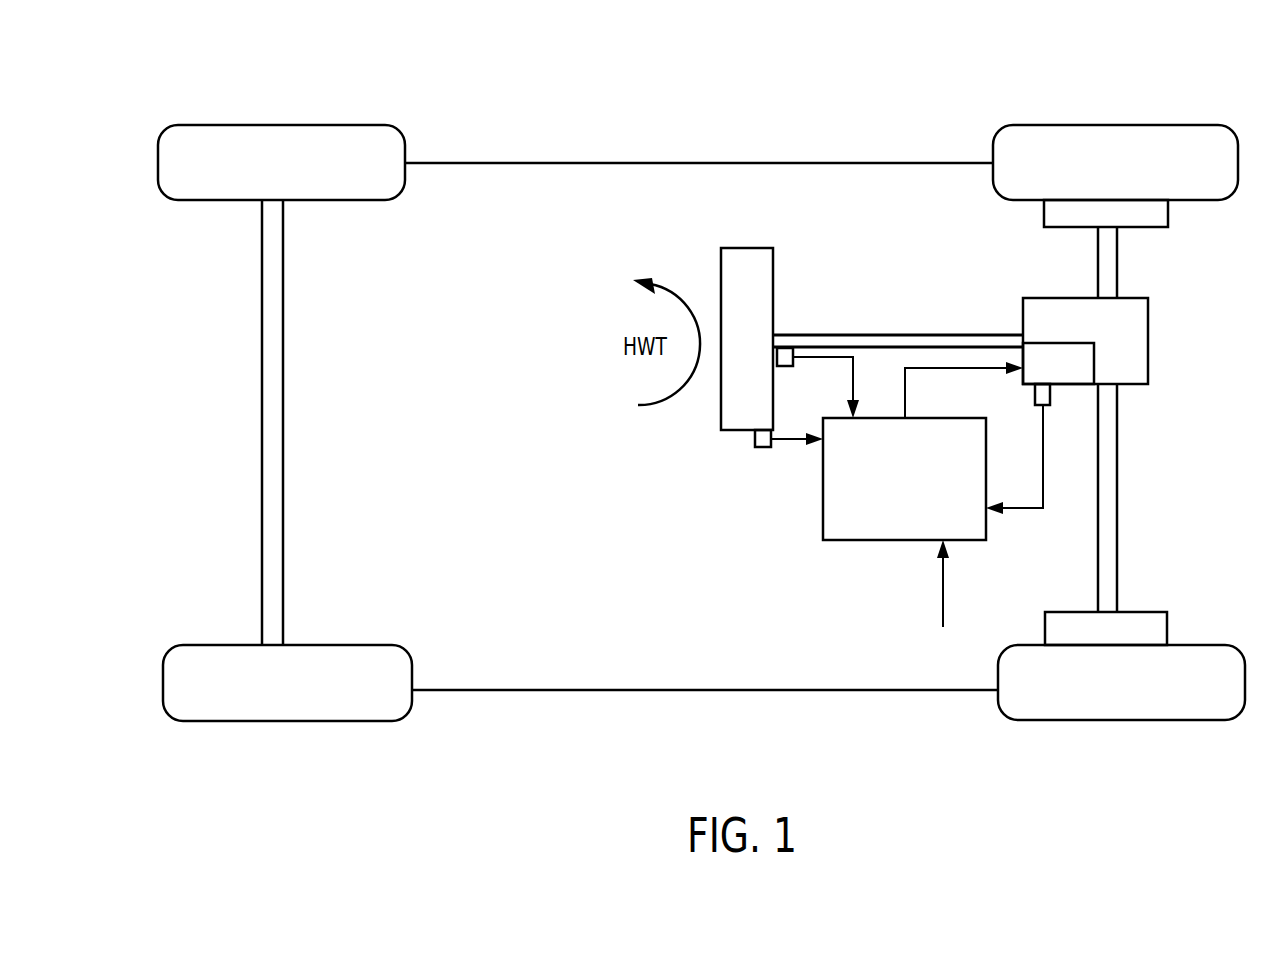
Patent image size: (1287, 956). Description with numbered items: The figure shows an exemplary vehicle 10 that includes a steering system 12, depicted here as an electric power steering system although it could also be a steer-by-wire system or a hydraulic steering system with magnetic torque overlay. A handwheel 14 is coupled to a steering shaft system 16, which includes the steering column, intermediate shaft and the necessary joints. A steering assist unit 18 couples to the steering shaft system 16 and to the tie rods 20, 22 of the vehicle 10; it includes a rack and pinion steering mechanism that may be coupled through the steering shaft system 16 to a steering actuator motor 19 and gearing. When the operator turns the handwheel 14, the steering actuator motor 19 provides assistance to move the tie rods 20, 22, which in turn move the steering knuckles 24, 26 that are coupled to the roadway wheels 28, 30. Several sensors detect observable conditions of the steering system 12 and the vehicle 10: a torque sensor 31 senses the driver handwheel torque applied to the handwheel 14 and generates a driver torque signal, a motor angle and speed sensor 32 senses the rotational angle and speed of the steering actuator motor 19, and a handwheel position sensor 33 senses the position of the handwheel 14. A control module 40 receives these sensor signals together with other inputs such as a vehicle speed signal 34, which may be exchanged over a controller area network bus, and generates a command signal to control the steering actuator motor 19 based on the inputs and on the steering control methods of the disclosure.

The vehicle 10 is at (870, 85).
The steering system 12 is at (870, 242).
The handwheel 14 is at (746, 248).
The steering shaft system 16 is at (930, 335).
The steering assist unit 18 is at (1148, 350).
The steering actuator motor 19 is at (1094, 372).
The tie rod 20 is at (1118, 272).
The tie rod 22 is at (1118, 477).
The steering knuckle 24 is at (1062, 230).
The steering knuckle 26 is at (1071, 612).
The roadway wheel 28 is at (1125, 125).
The roadway wheel 30 is at (1183, 645).
The torque sensor 31 is at (786, 366).
The motor angle and speed sensor 32 is at (1045, 405).
The handwheel position sensor 33 is at (763, 447).
The vehicle speed signal 34 is at (943, 600).
The control module 40 is at (850, 540).